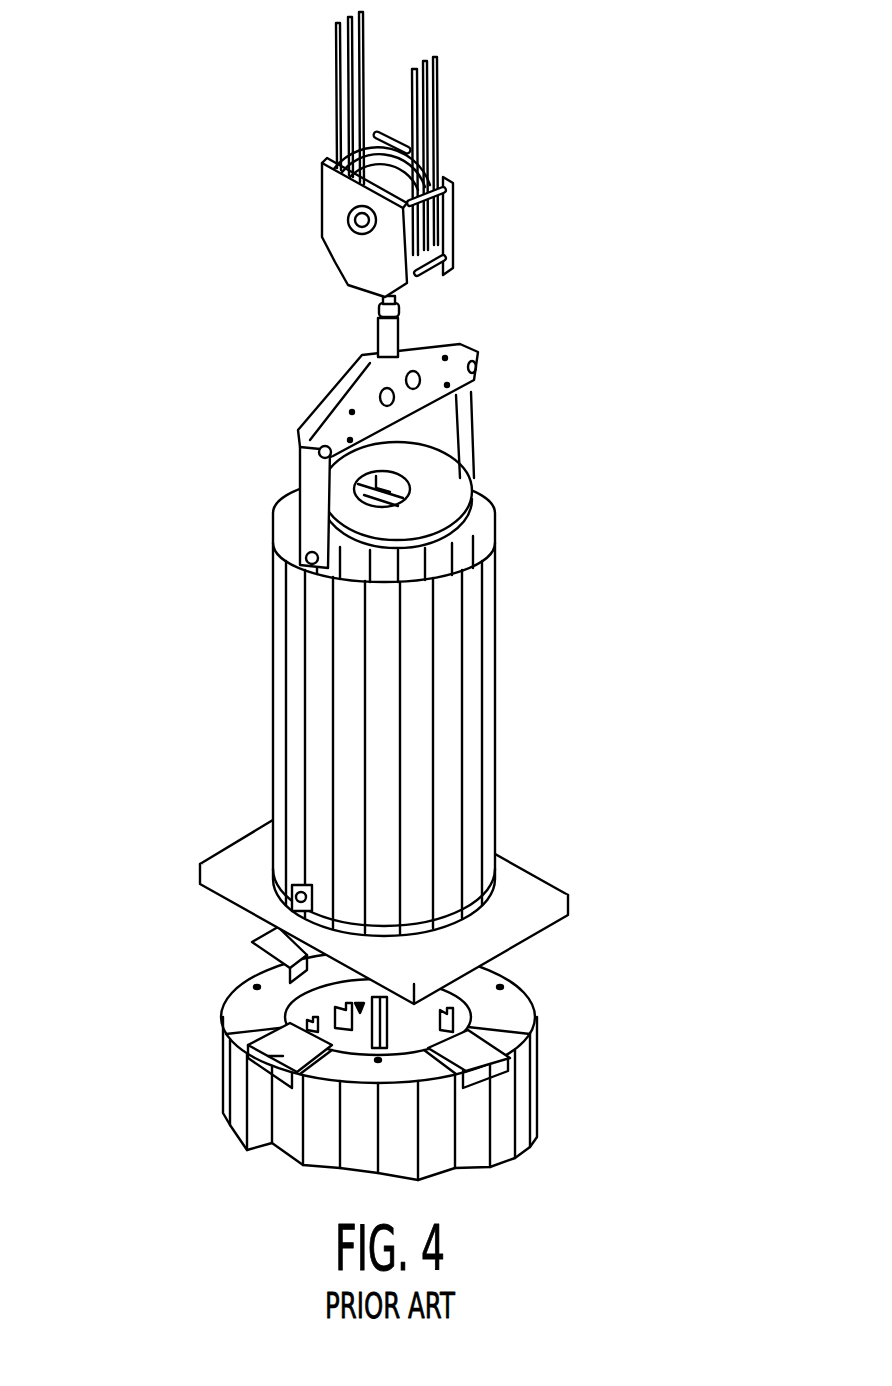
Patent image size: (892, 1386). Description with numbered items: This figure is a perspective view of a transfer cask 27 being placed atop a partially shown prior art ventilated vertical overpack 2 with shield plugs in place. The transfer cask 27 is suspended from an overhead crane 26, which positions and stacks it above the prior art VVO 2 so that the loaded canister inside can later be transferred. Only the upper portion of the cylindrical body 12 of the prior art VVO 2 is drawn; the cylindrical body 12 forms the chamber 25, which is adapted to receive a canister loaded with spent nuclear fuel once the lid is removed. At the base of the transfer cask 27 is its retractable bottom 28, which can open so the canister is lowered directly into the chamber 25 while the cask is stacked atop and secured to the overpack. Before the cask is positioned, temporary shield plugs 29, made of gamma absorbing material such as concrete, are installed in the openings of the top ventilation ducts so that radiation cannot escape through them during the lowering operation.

The prior art ventilated vertical overpack 2 is at (435, 596).
The cylindrical body 12 is at (523, 1104).
The chamber 25 is at (283, 990).
The overhead crane 26 is at (455, 229).
The transfer cask 27 is at (476, 643).
The retractable bottom 28 is at (560, 910).
The temporary shield plugs 29 is at (263, 940).